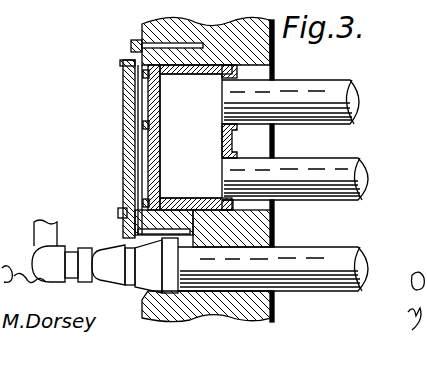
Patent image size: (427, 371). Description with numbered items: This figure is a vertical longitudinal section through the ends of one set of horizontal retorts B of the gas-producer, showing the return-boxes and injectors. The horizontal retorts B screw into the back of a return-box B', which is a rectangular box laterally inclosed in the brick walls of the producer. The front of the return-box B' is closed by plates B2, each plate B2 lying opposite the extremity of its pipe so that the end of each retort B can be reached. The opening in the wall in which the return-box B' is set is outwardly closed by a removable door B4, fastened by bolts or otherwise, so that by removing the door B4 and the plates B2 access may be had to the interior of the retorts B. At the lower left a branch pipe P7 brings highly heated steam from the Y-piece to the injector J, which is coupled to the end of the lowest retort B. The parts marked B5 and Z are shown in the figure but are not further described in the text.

The horizontal retort B is at (273, 185).
The return-box B' is at (198, 137).
The plate B2 is at (158, 98).
The door B4 is at (130, 118).
The screw plate B5 is at (133, 42).
The frame Z is at (274, 50).
The injector J is at (128, 265).
The branch pipe P7 is at (60, 245).